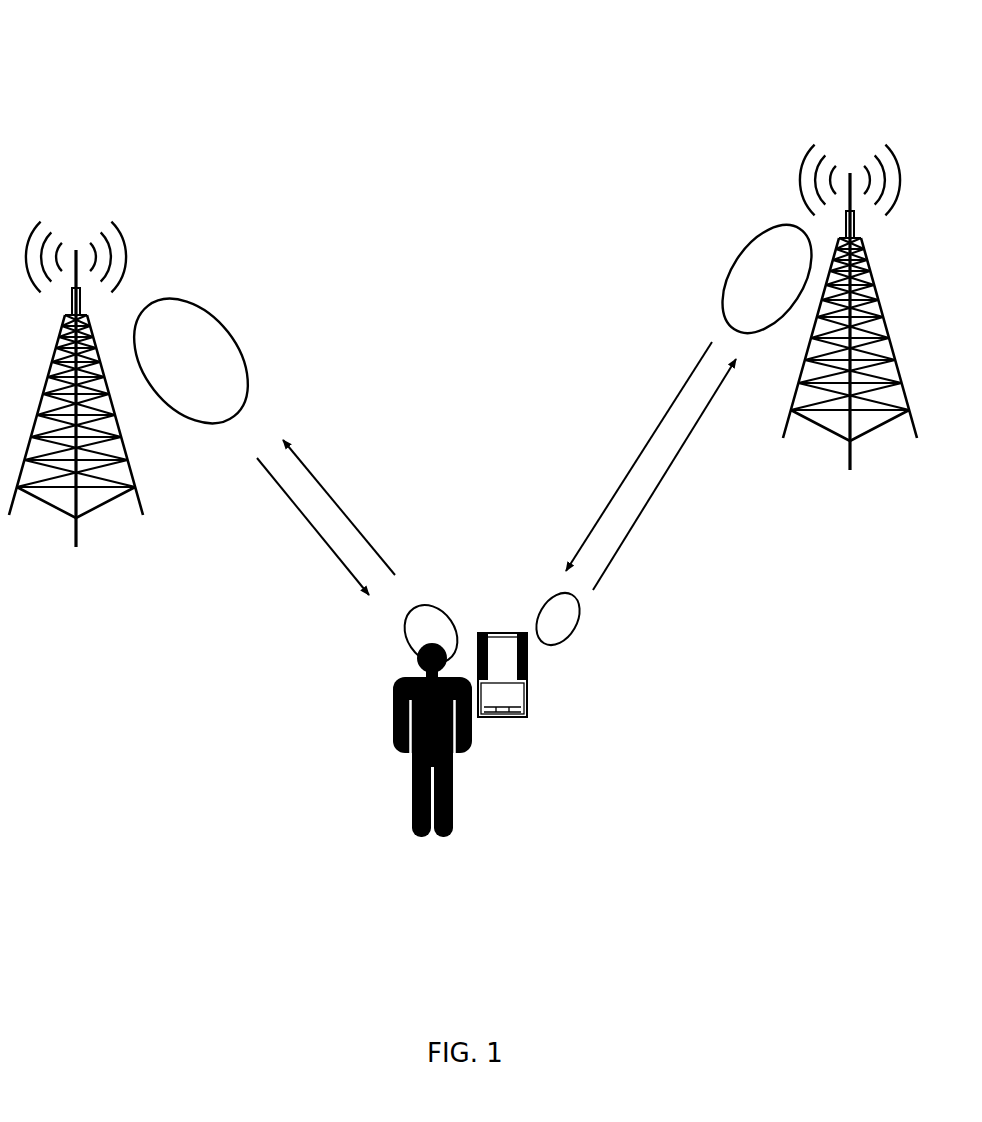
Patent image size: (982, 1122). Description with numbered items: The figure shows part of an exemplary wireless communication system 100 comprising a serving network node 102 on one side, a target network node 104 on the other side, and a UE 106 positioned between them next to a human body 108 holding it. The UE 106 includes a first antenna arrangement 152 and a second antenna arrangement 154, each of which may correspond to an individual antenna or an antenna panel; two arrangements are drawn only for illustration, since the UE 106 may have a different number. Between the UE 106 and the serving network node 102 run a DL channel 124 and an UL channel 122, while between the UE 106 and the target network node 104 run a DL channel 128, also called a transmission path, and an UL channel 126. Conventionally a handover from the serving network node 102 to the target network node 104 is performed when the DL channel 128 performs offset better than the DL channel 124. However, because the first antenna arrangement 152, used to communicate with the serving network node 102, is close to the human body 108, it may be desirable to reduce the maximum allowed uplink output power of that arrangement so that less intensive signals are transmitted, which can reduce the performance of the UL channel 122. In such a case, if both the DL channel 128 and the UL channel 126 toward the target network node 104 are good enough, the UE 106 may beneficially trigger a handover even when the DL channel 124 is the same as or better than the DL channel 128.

The wireless communication system 100 is at (123, 90).
The serving network node 102 is at (65, 542).
The target network node 104 is at (825, 457).
The UE 106 is at (498, 690).
The human body 108 is at (403, 836).
The UL channel 122 is at (335, 502).
The DL channel 124 is at (302, 520).
The UL channel 126 is at (673, 458).
The DL channel 128 is at (648, 438).
The first antenna arrangement 152 is at (480, 635).
The second antenna arrangement 154 is at (527, 665).